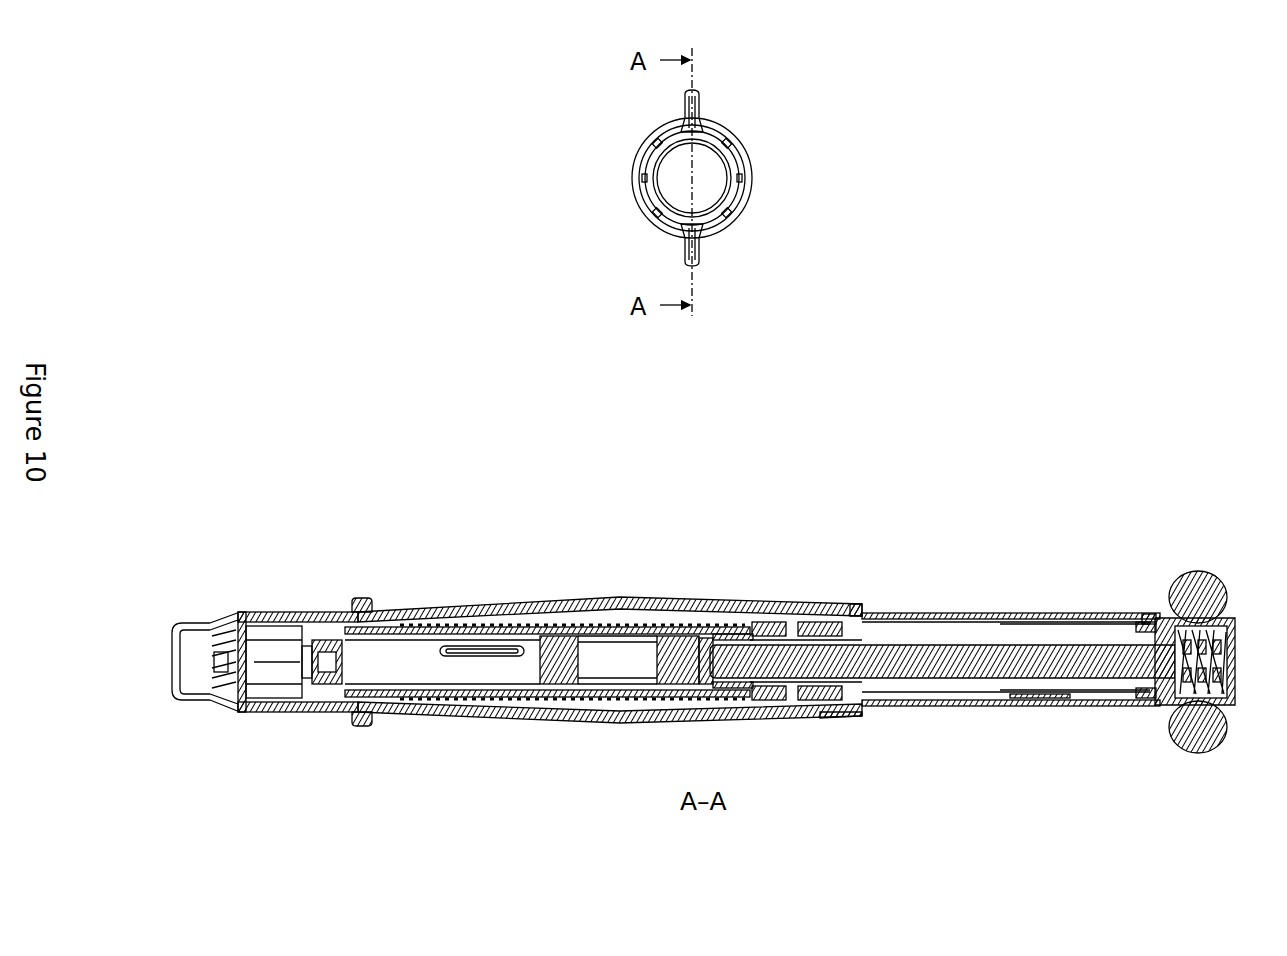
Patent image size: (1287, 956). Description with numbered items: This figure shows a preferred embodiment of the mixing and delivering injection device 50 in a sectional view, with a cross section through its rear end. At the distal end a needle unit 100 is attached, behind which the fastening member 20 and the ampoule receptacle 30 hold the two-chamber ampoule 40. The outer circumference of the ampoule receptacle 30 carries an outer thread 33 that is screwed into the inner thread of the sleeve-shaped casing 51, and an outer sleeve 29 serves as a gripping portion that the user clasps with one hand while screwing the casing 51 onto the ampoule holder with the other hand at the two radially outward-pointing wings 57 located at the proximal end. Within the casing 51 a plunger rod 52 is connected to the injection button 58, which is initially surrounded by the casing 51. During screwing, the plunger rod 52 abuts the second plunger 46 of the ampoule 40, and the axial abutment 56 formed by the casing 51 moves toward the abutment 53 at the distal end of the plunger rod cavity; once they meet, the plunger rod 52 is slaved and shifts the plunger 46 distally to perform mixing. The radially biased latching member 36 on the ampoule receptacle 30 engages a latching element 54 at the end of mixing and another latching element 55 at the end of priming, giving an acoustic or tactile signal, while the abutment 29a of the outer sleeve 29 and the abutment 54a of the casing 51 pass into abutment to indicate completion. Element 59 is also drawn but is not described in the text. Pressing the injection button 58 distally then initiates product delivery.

The needle unit 100 is at (282, 596).
The fastening member 20 is at (306, 612).
The ampoule 40 is at (402, 612).
The ampoule receptacle 30 is at (456, 626).
The outer sleeve 29 is at (528, 600).
The abutment 29a is at (860, 613).
The outer thread 33 is at (594, 636).
The second plunger 46 is at (702, 640).
The injection device 50 is at (818, 568).
The casing 51 is at (920, 614).
The plunger rod 52 is at (972, 648).
The abutment 53 is at (1018, 708).
The latching element 54 is at (961, 708).
The abutment 54a is at (1150, 612).
The latching element 55 is at (1057, 708).
The axial abutment 56 is at (1134, 708).
The wings 57 is at (700, 100).
The injection button 58 is at (1230, 620).
The slot 59 is at (608, 704).
The latching member 36 is at (770, 708).